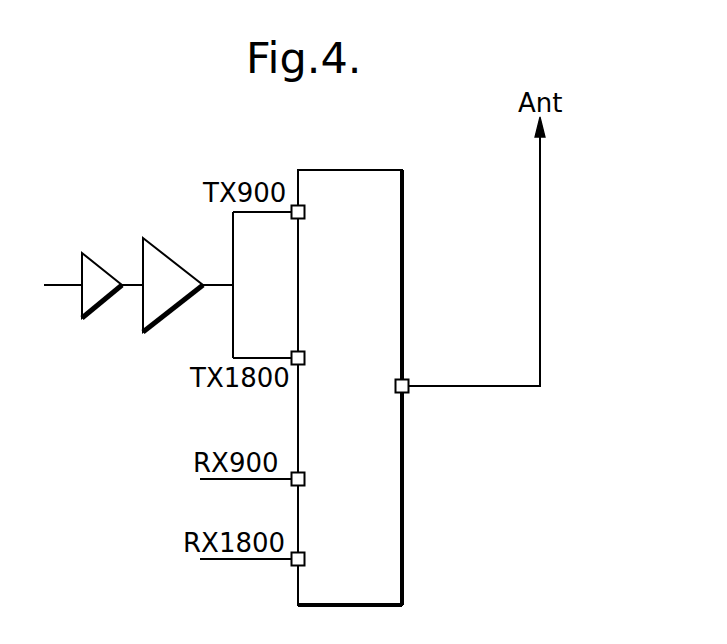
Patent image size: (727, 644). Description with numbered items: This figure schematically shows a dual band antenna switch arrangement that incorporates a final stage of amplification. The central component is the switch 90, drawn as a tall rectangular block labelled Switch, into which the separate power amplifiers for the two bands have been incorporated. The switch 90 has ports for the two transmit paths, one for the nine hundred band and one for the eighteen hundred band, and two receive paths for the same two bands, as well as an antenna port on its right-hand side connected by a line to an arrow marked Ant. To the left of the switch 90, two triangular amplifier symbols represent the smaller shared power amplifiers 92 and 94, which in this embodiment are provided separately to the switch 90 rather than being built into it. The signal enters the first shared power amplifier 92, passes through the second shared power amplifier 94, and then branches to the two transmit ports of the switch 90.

The switch 90 is at (365, 510).
The shared power amplifier 92 is at (102, 287).
The shared power amplifier 94 is at (167, 268).